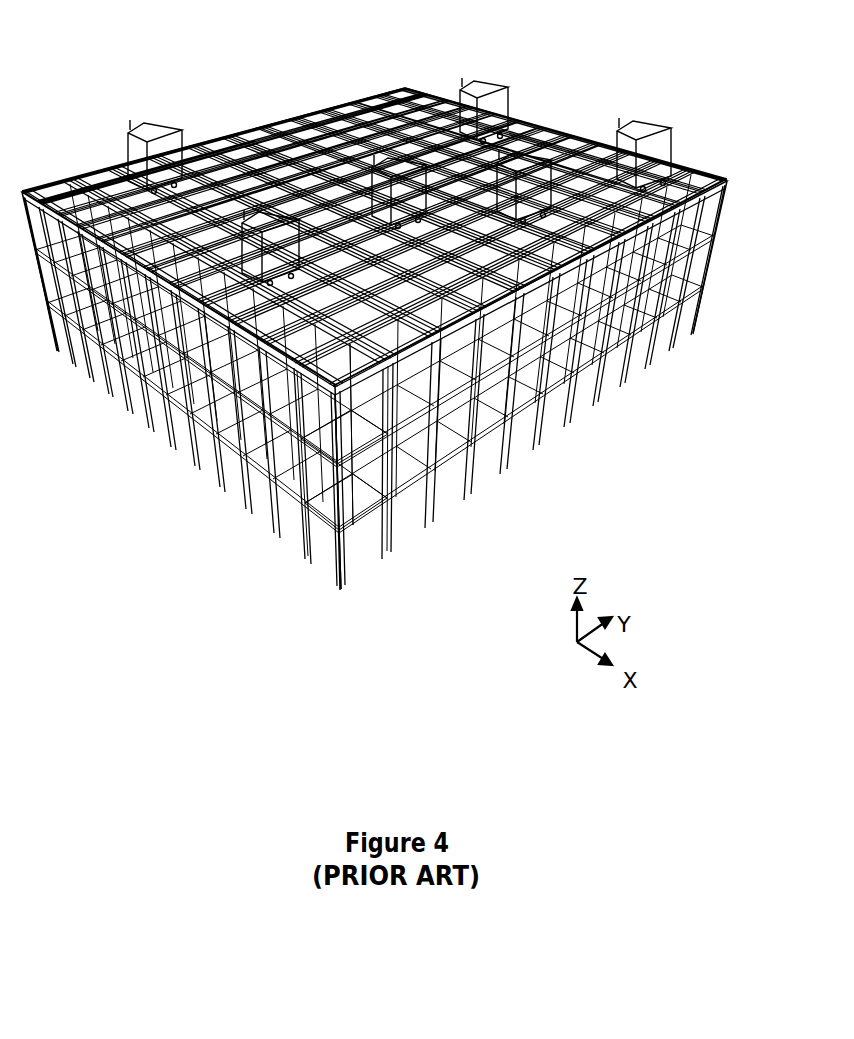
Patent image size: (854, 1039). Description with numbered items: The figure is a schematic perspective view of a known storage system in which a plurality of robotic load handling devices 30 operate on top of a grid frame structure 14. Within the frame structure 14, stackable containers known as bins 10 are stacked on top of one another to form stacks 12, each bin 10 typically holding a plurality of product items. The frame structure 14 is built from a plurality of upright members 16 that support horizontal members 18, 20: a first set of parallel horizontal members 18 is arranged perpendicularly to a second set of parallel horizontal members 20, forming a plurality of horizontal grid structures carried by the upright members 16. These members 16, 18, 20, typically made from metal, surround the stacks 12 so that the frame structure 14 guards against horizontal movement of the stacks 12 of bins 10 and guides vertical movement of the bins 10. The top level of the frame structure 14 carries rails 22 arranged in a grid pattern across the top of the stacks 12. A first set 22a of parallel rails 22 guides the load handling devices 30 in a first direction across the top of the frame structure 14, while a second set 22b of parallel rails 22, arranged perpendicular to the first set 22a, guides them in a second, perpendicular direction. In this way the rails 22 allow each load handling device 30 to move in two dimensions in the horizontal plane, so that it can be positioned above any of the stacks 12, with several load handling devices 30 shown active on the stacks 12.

The bin 10 is at (355, 492).
The stack 12 is at (603, 385).
The frame structure 14 is at (692, 178).
The upright member 16 is at (273, 492).
The first set of parallel horizontal members 18 is at (450, 420).
The second set of parallel horizontal members 20 is at (205, 398).
The rails 22 is at (92, 187).
The first set of parallel rails 22a is at (203, 282).
The second set of parallel rails 22b is at (268, 180).
The robotic load handling device 30 is at (497, 110).